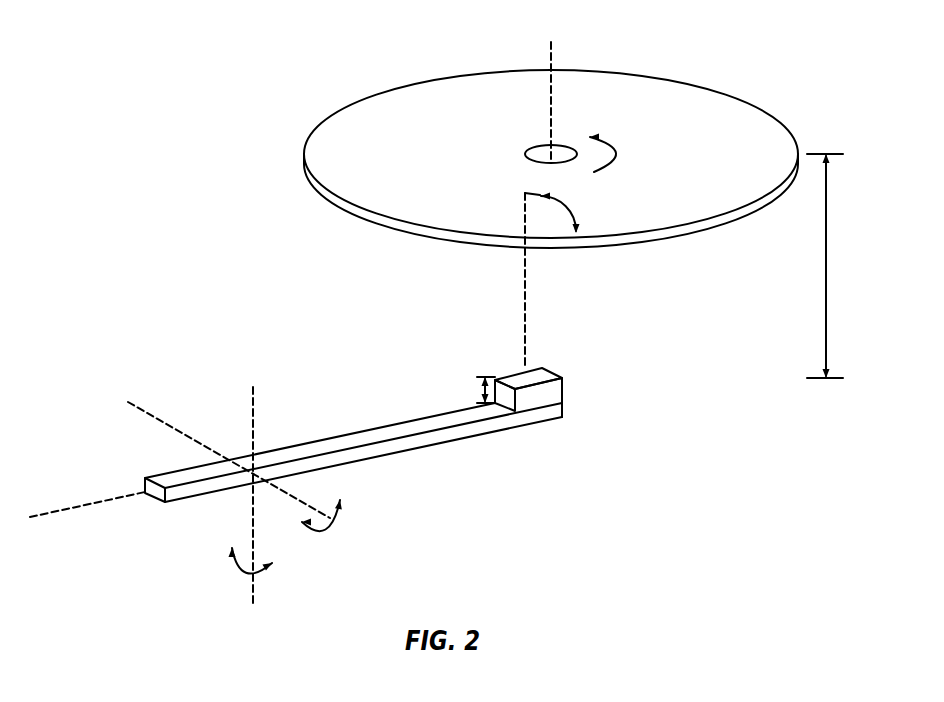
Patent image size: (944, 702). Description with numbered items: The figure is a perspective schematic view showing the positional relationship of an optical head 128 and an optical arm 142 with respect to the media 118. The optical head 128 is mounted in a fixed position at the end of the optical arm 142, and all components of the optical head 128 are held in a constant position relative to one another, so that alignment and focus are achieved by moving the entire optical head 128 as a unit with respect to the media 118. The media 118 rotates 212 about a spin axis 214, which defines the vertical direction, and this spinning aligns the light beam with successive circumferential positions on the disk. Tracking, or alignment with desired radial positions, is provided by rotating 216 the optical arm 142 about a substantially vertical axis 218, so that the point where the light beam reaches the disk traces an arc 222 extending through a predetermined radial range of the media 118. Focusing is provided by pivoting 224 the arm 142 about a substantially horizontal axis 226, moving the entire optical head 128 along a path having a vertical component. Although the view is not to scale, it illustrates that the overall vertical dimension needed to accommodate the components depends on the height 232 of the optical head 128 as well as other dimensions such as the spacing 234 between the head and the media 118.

The media 118 is at (348, 118).
The optical head 128 is at (548, 395).
The optical arm 142 is at (418, 442).
The rotation of media 212 is at (617, 152).
The spin axis 214 is at (554, 58).
The rotation of optical arm 216 is at (236, 572).
The vertical axis 218 is at (257, 413).
The arc 222 is at (575, 206).
The pivoting of arm 224 is at (337, 527).
The horizontal axis 226 is at (153, 423).
The height of optical head 232 is at (480, 389).
The spacing to media 234 is at (825, 295).